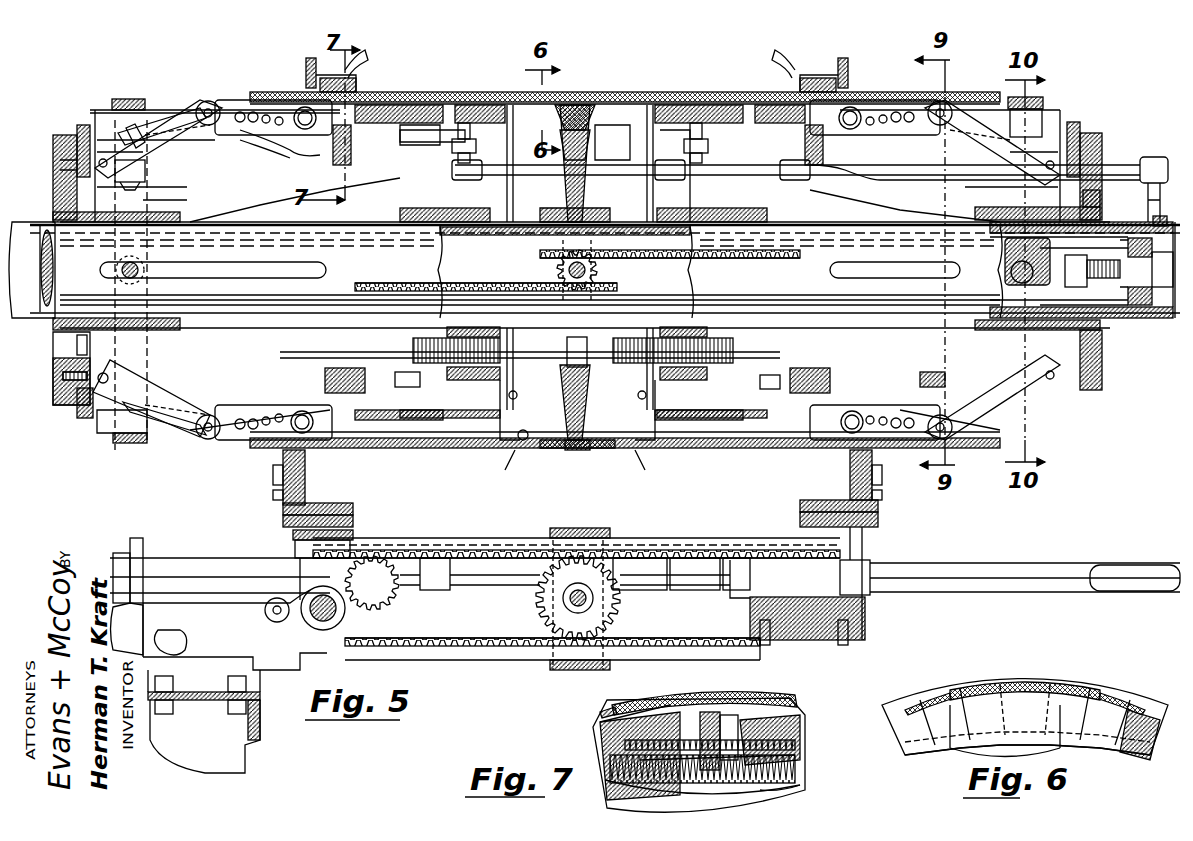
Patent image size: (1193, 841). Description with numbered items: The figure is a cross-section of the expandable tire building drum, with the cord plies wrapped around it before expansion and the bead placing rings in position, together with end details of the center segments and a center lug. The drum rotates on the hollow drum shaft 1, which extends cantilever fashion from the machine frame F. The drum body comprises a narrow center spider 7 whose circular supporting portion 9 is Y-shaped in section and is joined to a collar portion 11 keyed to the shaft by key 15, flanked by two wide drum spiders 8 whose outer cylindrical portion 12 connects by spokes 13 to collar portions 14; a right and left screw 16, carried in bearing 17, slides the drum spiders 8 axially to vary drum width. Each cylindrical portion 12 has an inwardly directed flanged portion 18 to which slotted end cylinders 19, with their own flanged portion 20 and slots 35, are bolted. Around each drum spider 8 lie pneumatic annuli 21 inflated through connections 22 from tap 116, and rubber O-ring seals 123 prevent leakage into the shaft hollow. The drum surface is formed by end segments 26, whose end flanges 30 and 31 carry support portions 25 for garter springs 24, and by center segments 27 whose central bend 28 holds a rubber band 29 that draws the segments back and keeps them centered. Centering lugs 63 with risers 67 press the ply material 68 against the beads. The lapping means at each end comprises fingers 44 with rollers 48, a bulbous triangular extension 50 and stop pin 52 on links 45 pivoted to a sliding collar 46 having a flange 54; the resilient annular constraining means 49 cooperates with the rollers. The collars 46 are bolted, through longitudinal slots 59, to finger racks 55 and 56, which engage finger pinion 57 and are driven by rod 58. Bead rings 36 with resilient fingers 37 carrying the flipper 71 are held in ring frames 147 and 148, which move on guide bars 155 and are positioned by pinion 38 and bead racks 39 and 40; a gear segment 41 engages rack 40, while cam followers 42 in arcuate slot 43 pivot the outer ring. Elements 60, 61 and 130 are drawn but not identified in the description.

In FIG. 5, the drum shaft 1 is at (35, 228).
In FIG. 5, the center spider 7 is at (590, 130).
In FIG. 6, the center spider 7 is at (958, 752).
In FIG. 5, the drum spiders 8 is at (513, 195).
In FIG. 5, the circular supporting portion 9 is at (562, 100).
In FIG. 6, the circular supporting portion 9 is at (980, 700).
In FIG. 5, the collar portion 11 is at (590, 190).
In FIG. 5, the outer cylindrical portion 12 is at (433, 105).
In FIG. 5, the ribs or spokes 13 is at (410, 150).
In FIG. 5, the collar portions 14 is at (450, 210).
In FIG. 5, the key 15 is at (668, 215).
In FIG. 5, the right and left screw 16 is at (295, 342).
In FIG. 5, the bearing 17 is at (548, 360).
In FIG. 5, the inwardly directed flanged portion 18 is at (832, 348).
In FIG. 5, the slotted end cylinders 19 is at (92, 110).
In FIG. 7, the slotted end cylinders 19 is at (593, 745).
In FIG. 5, the flanged portion 20 is at (325, 378).
In FIG. 5, the pneumatic annuli 21 is at (400, 100).
In FIG. 5, the pneumatic inflating connections 22 is at (440, 142).
In FIG. 5, the garter springs 24 is at (528, 428).
In FIG. 7, the garter springs 24 is at (795, 748).
In FIG. 5, the support portions 25 is at (520, 400).
In FIG. 7, the support portions 25 is at (800, 788).
In FIG. 5, the end segments 26 is at (482, 450).
In FIG. 7, the end segments 26 is at (600, 712).
In FIG. 5, the center segments 27 is at (545, 452).
In FIG. 6, the center segments 27 is at (915, 705).
In FIG. 5, the central bend 28 is at (590, 415).
In FIG. 5, the rubber band 29 is at (580, 452).
In FIG. 6, the rubber band 29 is at (1155, 720).
In FIG. 5, the end flanges 30 is at (440, 450).
In FIG. 5, the end flanges 31 is at (579, 469).
In FIG. 5, the slots or cuts 35 is at (262, 150).
In FIG. 5, the bead rings 36 is at (308, 60).
In FIG. 5, the resilient fingers 37 is at (350, 95).
In FIG. 5, the pinion 38 is at (535, 608).
In FIG. 5, the bead rack 39 is at (478, 662).
In FIG. 5, the bead rack 40 is at (690, 545).
In FIG. 5, the gear segment 41 is at (390, 605).
In FIG. 5, the cam followers 42 is at (264, 608).
In FIG. 5, the arcuate slot 43 is at (178, 648).
In FIG. 5, the fingers or folders 44 is at (235, 100).
In FIG. 5, the links 45 is at (170, 112).
In FIG. 5, the sliding collar 46 is at (55, 140).
In FIG. 5, the rollers 48 is at (240, 125).
In FIG. 5, the resilient annular constraining means 49 is at (300, 106).
In FIG. 5, the bulbous triangular extension 50 is at (155, 110).
In FIG. 5, the stop pin 52 is at (195, 100).
In FIG. 5, the flange 54 is at (80, 125).
In FIG. 5, the finger rack 55 is at (500, 262).
In FIG. 5, the finger rack 56 is at (680, 255).
In FIG. 5, the finger pinion 57 is at (555, 268).
In FIG. 5, the rod 58 is at (1150, 310).
In FIG. 5, the longitudinal slots 59 is at (240, 270).
In FIG. 5, the cap 60 is at (122, 99).
In FIG. 5, the bolt 61 is at (135, 192).
In FIG. 5, the centering lug 63 is at (310, 178).
In FIG. 7, the centering lug 63 is at (737, 737).
In FIG. 7, the risers 67 is at (712, 712).
In FIG. 5, the ply material 68 is at (500, 92).
In FIG. 7, the ply material 68 is at (690, 697).
In FIG. 6, the ply material 68 is at (1025, 688).
In FIG. 5, the flipper 71 is at (360, 58).
In FIG. 5, the tap 116 is at (1170, 180).
In FIG. 5, the rubber O-ring seals 123 is at (1120, 330).
In FIG. 5, the shaft end 130 is at (1100, 565).
In FIG. 5, the inner ring frame 147 is at (878, 520).
In FIG. 5, the outer bead ring frame 148 is at (283, 507).
In FIG. 5, the guide bars 155 is at (190, 565).
In FIG. 5, the machine frame F is at (135, 560).